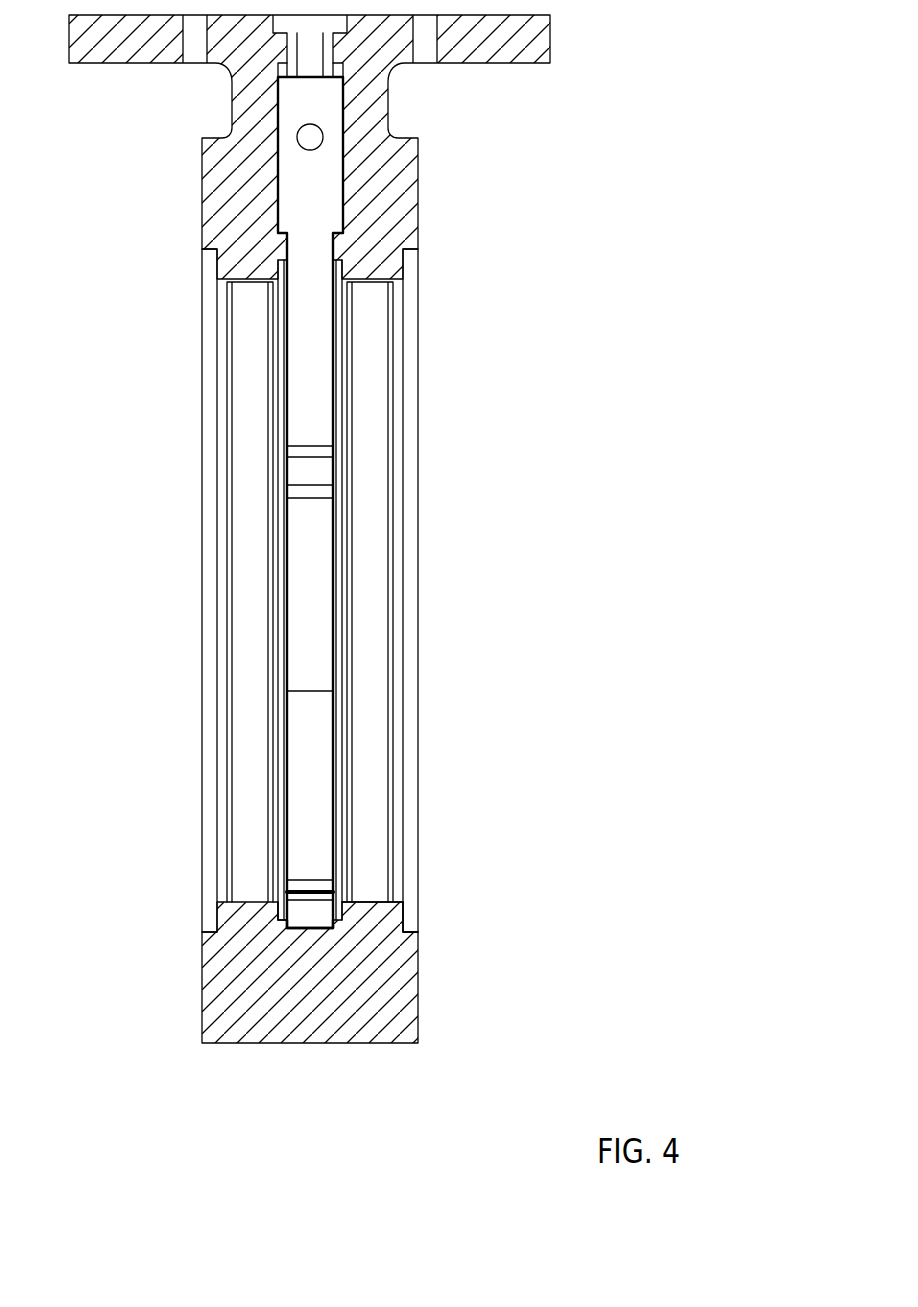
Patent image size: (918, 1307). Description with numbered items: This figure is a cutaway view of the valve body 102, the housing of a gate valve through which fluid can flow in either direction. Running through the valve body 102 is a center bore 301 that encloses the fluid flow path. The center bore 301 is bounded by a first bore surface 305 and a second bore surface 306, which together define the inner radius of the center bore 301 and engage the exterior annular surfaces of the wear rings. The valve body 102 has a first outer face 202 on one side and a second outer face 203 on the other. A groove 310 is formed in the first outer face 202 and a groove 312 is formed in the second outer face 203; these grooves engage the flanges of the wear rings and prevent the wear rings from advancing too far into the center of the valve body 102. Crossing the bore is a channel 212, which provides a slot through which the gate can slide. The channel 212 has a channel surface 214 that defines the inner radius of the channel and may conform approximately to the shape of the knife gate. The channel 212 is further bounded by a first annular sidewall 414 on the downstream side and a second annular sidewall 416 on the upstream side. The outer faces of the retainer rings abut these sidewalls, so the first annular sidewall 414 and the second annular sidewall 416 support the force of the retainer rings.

The valve body 102 is at (309, 553).
The first outer face 202 is at (208, 225).
The second outer face 203 is at (418, 1025).
The channel 212 is at (296, 598).
The channel surface 214 is at (316, 930).
The center bore 301 is at (248, 597).
The first bore surface 305 is at (367, 518).
The second bore surface 306 is at (365, 900).
The groove 310 is at (203, 405).
The groove 312 is at (410, 920).
The first annular sidewall 414 is at (281, 912).
The second annular sidewall 416 is at (342, 915).